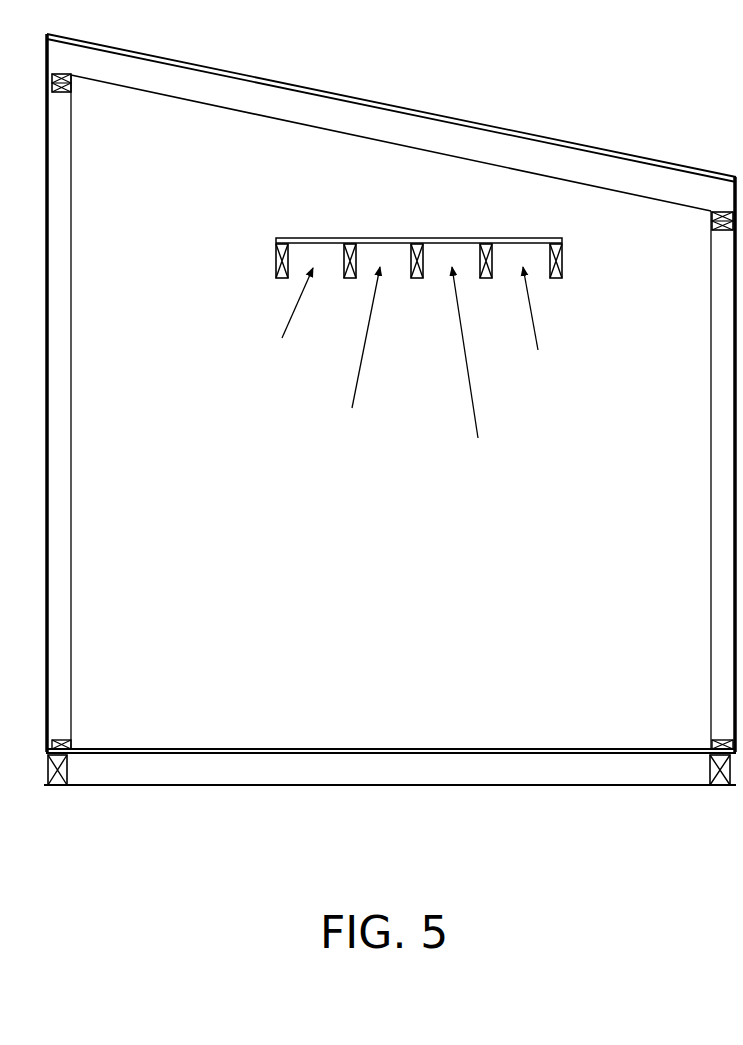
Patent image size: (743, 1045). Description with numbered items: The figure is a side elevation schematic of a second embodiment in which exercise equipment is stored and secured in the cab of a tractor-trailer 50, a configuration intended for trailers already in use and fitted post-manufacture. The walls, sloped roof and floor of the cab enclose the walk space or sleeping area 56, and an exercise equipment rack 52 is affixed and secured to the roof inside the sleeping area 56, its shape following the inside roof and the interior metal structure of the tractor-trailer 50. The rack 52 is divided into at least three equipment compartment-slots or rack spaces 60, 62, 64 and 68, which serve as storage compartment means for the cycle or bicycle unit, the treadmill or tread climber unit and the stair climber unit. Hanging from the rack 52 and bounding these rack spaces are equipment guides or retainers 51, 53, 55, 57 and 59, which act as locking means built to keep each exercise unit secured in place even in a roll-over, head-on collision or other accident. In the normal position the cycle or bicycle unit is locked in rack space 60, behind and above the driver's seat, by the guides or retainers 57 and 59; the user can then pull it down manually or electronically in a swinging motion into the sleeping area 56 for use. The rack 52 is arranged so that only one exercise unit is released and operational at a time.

The tractor-trailer 50 is at (612, 112).
The exercise equipment rack 52 is at (358, 237).
The equipment guide or retainer 51 is at (283, 279).
The equipment guide or retainer 53 is at (347, 279).
The equipment guide or retainer 55 is at (417, 279).
The equipment guide or retainer 57 is at (486, 279).
The equipment guide or retainer 59 is at (556, 279).
The compartment-slot or rack space 68 is at (282, 338).
The compartment-slot or rack space 64 is at (352, 408).
The compartment-slot or rack space 62 is at (478, 438).
The compartment-slot or rack space 60 is at (538, 350).
The sleeping area 56 is at (444, 596).